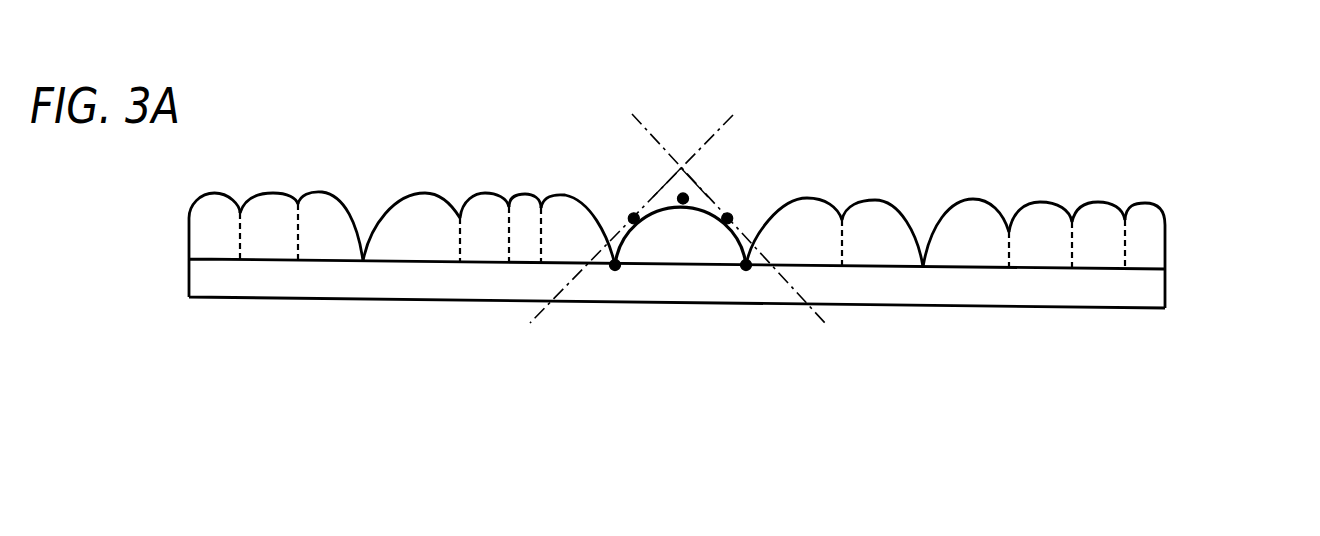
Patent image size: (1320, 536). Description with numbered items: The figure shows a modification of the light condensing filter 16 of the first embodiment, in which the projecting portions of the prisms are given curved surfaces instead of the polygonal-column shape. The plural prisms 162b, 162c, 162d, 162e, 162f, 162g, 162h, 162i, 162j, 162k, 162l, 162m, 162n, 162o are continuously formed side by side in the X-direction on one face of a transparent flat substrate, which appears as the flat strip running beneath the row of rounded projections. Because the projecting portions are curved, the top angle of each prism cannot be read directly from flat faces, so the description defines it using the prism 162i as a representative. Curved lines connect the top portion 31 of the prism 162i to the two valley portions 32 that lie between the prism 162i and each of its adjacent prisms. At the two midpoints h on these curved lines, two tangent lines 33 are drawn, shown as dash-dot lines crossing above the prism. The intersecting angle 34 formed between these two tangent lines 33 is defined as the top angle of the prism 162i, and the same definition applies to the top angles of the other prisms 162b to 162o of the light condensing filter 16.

The light condensing filter 16 is at (1187, 231).
The top portion 31 is at (650, 203).
The valley portions 32 is at (615, 266).
The tangent lines 33 is at (530, 323).
The intersecting angle 34 is at (676, 193).
The midpoints h is at (633, 216).
The prism 162b is at (210, 247).
The prism 162c is at (260, 247).
The prism 162d is at (318, 248).
The prism 162e is at (402, 247).
The prism 162f is at (477, 252).
The prism 162g is at (522, 250).
The prism 162h is at (563, 238).
The prism 162i is at (688, 252).
The prism 162j is at (832, 253).
The prism 162k is at (877, 253).
The prism 162l is at (953, 253).
The prism 162m is at (1038, 257).
The prism 162n is at (1097, 257).
The prism 162o is at (1147, 258).